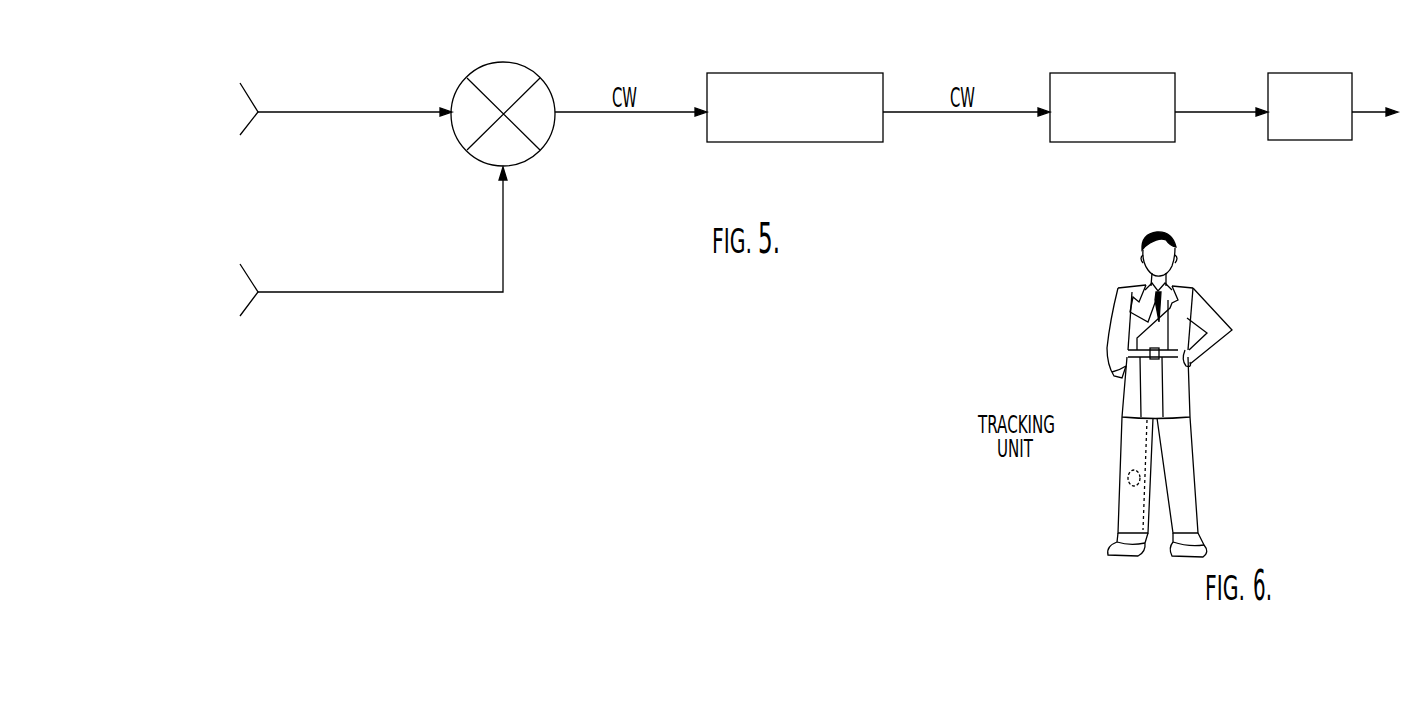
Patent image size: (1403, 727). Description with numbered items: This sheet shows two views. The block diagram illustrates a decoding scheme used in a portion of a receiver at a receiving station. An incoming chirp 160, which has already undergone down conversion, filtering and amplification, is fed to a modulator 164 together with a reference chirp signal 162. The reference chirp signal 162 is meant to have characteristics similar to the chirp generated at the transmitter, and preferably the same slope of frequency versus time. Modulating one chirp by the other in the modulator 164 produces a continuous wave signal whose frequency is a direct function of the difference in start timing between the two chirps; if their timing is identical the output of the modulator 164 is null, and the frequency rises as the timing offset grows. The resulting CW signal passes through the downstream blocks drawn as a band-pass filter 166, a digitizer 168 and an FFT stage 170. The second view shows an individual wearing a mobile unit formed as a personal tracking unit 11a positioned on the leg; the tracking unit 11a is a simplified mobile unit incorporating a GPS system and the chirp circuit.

In FIG. 5, the incoming chirp 160 is at (301, 112).
In FIG. 5, the reference chirp signal 162 is at (327, 246).
In FIG. 5, the modulator 164 is at (506, 63).
In FIG. 5, the BP filter 166 is at (770, 73).
In FIG. 5, the digitizer 168 is at (1103, 73).
In FIG. 5, the FFT 170 is at (1302, 73).
In FIG. 6, the personal tracking unit 11a is at (1122, 493).